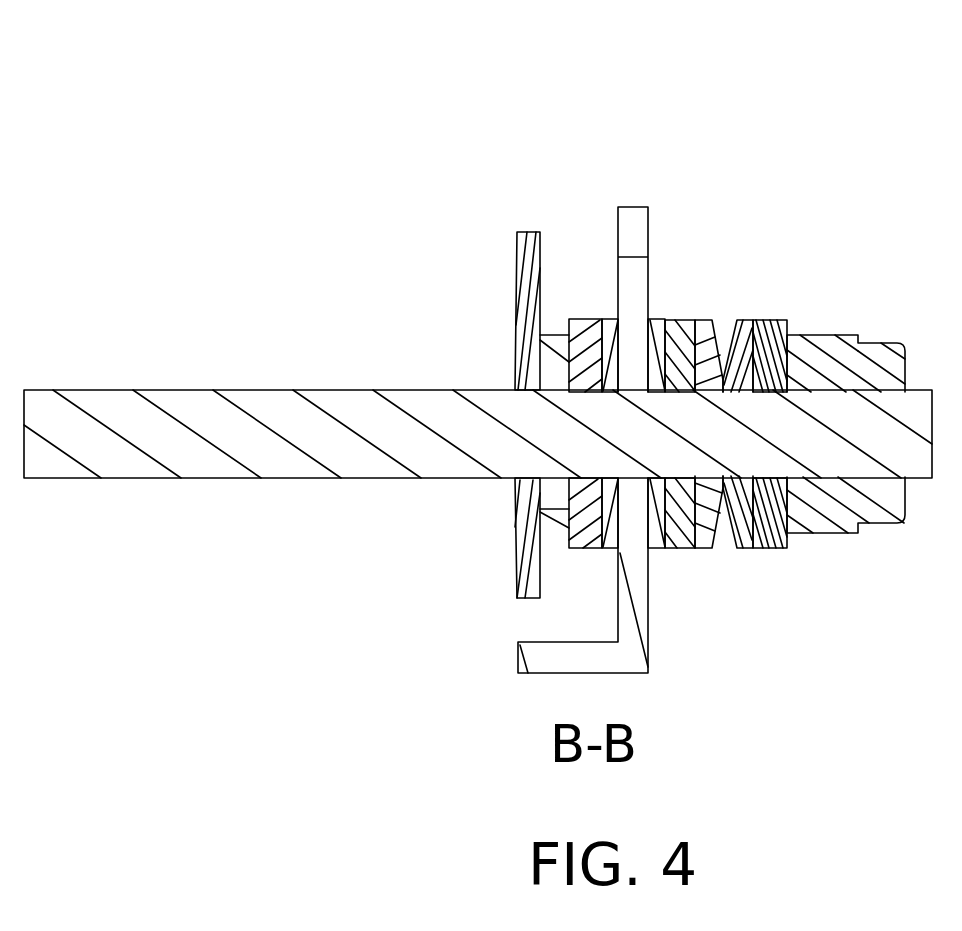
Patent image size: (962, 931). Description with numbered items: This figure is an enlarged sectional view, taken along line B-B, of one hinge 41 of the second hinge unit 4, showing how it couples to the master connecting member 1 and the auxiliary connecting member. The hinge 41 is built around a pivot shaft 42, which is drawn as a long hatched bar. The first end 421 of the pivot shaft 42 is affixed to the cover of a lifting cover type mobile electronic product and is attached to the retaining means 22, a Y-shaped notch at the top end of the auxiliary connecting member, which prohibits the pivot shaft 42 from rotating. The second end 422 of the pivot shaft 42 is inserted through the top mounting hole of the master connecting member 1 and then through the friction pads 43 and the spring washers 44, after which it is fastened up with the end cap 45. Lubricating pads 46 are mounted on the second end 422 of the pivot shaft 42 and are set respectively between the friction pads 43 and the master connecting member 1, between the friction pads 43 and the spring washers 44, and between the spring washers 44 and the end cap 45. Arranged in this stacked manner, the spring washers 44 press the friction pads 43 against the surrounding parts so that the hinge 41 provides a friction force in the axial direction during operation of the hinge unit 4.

The master connecting member 1 is at (618, 613).
The second hinge unit 4 is at (815, 182).
The retaining means 22 is at (515, 390).
The hinge 41 is at (730, 153).
The pivot shaft 42 is at (540, 536).
The friction pads 43 is at (655, 319).
The spring washers 44 is at (750, 320).
The end cap 45 is at (832, 336).
The lubricating pads 46 is at (582, 319).
The first end 421 is at (262, 390).
The second end 422 is at (733, 463).